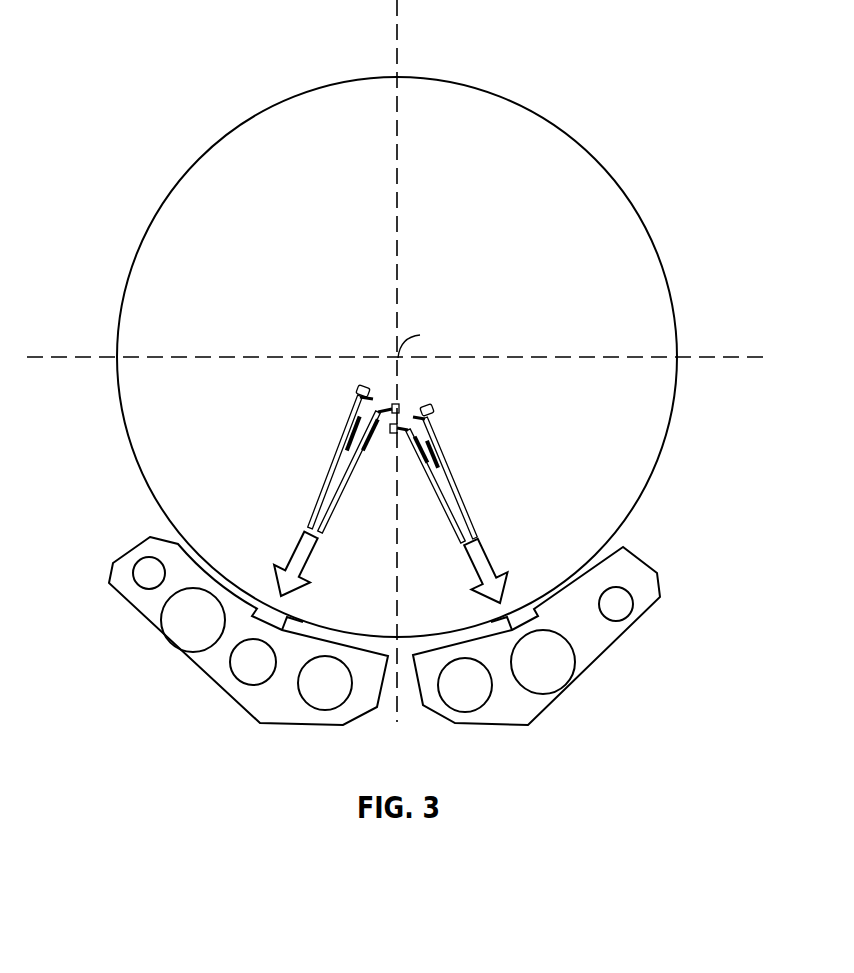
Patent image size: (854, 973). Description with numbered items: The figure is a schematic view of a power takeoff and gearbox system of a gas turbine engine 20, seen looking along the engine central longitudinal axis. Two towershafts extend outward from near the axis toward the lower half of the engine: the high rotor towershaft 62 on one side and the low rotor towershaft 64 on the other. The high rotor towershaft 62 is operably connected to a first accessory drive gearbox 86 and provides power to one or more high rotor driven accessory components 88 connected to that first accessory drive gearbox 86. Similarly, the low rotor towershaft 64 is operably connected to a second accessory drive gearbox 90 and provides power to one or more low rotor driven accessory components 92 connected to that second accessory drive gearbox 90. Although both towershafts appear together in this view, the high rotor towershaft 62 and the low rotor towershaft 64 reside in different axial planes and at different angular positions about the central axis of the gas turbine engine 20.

The gas turbine engine 20 is at (655, 92).
The high rotor towershaft 62 is at (322, 499).
The low rotor towershaft 64 is at (462, 499).
The first accessory drive gearbox 86 is at (143, 640).
The high rotor driven accessory components 88 is at (183, 640).
The second accessory drive gearbox 90 is at (633, 648).
The low rotor driven accessory components 92 is at (463, 700).